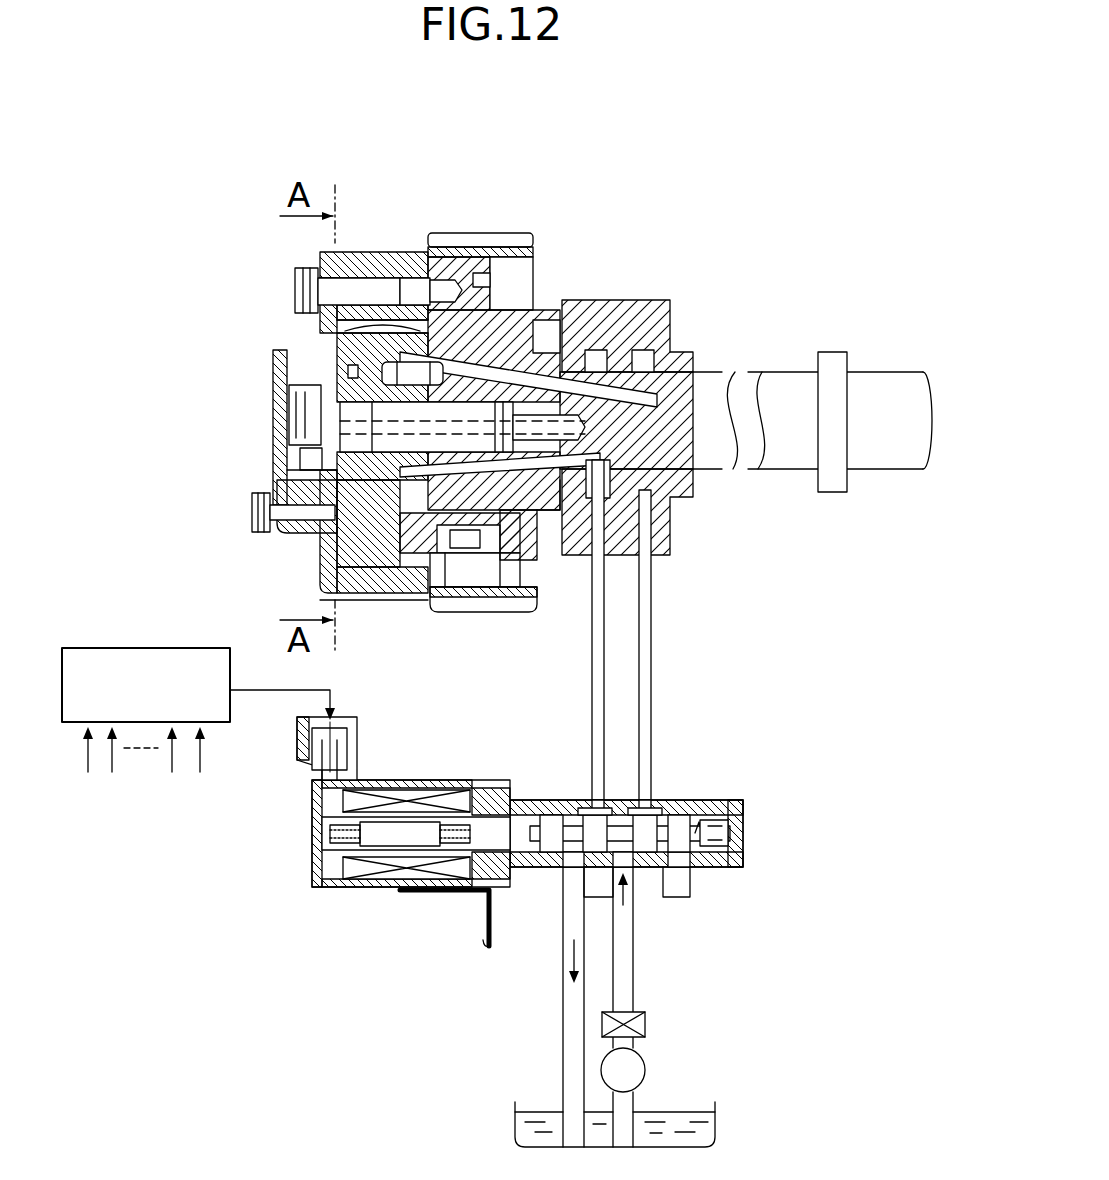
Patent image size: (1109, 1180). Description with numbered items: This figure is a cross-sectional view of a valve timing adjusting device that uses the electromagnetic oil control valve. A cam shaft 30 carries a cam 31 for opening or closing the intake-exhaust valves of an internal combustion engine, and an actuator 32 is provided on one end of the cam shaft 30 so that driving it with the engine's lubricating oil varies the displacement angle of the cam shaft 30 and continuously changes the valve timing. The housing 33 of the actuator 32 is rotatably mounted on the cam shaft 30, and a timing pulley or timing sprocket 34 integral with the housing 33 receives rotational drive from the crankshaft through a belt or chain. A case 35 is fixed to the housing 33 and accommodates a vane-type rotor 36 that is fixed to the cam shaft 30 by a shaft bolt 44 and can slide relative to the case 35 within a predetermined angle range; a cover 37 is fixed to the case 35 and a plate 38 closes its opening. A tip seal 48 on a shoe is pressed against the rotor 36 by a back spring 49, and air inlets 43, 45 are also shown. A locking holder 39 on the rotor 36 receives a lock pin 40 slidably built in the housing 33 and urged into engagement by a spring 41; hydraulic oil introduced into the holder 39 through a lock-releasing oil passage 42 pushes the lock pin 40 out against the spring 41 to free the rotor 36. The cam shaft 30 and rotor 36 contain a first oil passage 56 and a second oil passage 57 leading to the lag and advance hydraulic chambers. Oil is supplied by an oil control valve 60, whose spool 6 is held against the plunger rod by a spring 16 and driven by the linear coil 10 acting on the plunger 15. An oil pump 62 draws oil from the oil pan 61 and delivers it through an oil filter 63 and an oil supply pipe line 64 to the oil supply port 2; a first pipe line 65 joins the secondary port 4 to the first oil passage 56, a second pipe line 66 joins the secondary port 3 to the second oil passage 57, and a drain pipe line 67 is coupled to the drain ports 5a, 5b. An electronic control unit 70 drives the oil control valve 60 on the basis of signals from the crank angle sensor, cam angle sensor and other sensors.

The oil supply port 2 is at (640, 866).
The secondary port 3 is at (647, 800).
The secondary port 4 is at (585, 800).
The drain port 5a is at (672, 863).
The drain port 5b is at (568, 862).
The spool 6 is at (543, 800).
The linear coil 10 is at (352, 883).
The plunger 15 is at (378, 857).
The spring 16 is at (715, 865).
The cam shaft 30 is at (770, 370).
The cam 31 is at (848, 495).
The actuator 32 is at (517, 228).
The housing 33 is at (503, 317).
The timing pulley or timing sprocket 34 is at (468, 233).
The case 35 is at (375, 250).
The vane-type rotor 36 is at (264, 512).
The cover 37 is at (285, 363).
The plate 38 is at (285, 394).
The locking holder 39 is at (368, 597).
The lock pin 40 is at (470, 600).
The spring 41 is at (513, 597).
The lock-releasing oil passage 42 is at (298, 537).
The air inlet 43 is at (533, 548).
The shaft bolt 44 is at (292, 458).
The air inlet 45 is at (350, 440).
The tip seal 48 is at (322, 345).
The back spring 49 is at (297, 281).
The first oil passage 56 is at (672, 508).
The second oil passage 57 is at (612, 395).
The oil control valve 60 is at (796, 762).
The oil pan 61 is at (715, 1125).
The oil pump 62 is at (645, 1070).
The oil filter 63 is at (645, 1025).
The oil supply pipe line 64 is at (636, 988).
The first pipe line 65 is at (597, 702).
The second pipe line 66 is at (652, 660).
The drain pipe line 67 is at (563, 1013).
The electronic control unit 70 is at (145, 648).